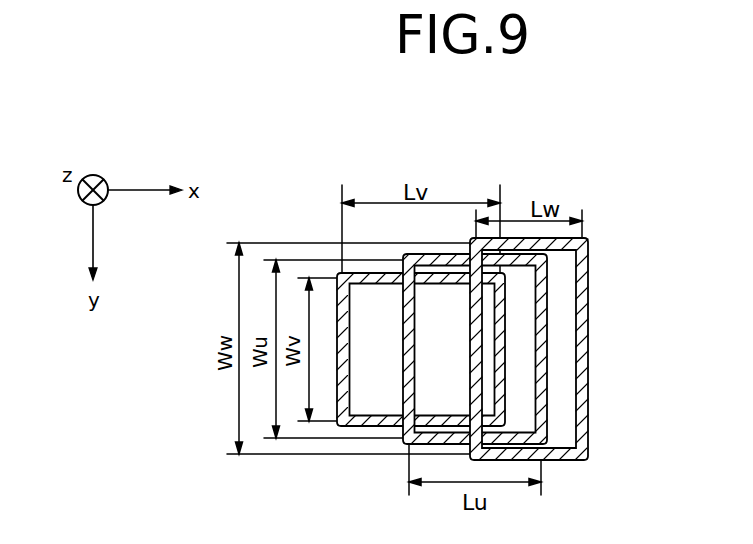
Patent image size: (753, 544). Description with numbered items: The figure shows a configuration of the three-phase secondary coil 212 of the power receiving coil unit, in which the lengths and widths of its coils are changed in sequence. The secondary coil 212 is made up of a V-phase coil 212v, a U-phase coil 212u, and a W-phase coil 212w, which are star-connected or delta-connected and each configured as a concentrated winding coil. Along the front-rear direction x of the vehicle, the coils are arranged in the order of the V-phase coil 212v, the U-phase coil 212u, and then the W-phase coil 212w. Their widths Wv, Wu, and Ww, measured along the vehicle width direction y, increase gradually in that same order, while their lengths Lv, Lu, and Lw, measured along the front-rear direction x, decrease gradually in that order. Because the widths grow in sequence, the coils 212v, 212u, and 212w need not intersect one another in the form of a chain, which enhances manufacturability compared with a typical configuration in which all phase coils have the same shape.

The secondary coil 212 is at (588, 147).
The V-phase coil 212v is at (390, 281).
The U-phase coil 212u is at (457, 263).
The W-phase coil 212w is at (530, 246).